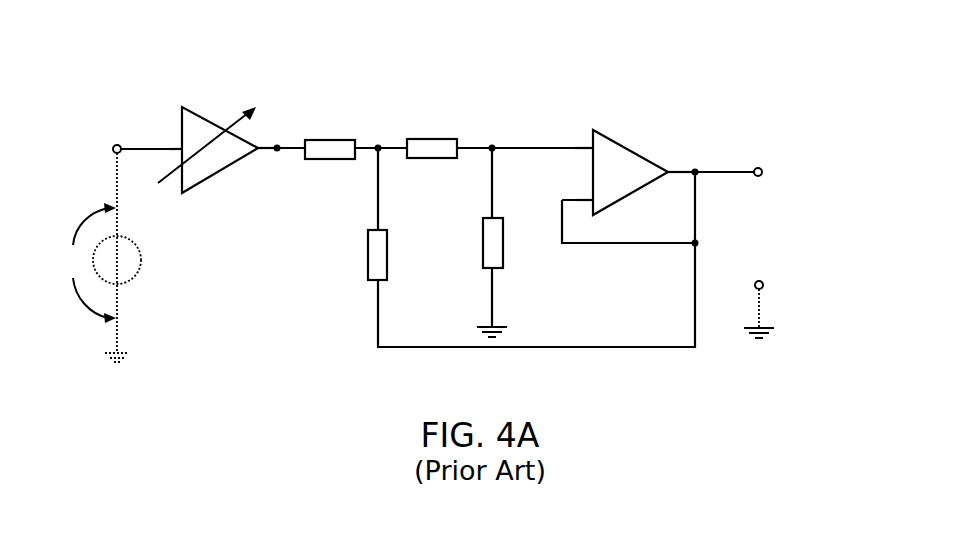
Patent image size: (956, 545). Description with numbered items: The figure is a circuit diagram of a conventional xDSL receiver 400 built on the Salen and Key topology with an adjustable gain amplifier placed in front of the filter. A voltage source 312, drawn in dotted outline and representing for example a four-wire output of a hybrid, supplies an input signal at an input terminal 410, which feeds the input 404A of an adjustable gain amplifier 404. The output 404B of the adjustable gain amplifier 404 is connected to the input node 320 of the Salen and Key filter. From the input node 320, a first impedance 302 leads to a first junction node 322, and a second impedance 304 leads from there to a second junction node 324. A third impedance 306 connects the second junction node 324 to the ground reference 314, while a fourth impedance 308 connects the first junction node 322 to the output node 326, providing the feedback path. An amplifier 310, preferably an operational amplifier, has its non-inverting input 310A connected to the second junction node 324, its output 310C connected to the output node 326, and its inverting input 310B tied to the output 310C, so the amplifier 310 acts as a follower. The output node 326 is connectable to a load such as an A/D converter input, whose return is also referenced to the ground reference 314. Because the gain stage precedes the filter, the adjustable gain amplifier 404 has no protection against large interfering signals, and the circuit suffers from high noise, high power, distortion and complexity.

The conventional xDSL receiver circuit 400 is at (336, 38).
The input terminal 410 is at (118, 145).
The voltage source 312 is at (140, 265).
The adjustable gain amplifier 404 is at (192, 108).
The input 404A is at (181, 148).
The output 404B is at (264, 148).
The input node 320 is at (278, 152).
The first impedance 302 is at (335, 160).
The first junction node 322 is at (379, 145).
The second impedance 304 is at (425, 158).
The second junction node 324 is at (493, 145).
The fourth impedance 308 is at (387, 232).
The third impedance 306 is at (503, 258).
The ground reference 314 is at (494, 305).
The amplifier 310 is at (625, 143).
The non-inverting input 310A is at (592, 145).
The inverting input 310B is at (592, 198).
The output 310C is at (669, 170).
The output node 326 is at (759, 167).